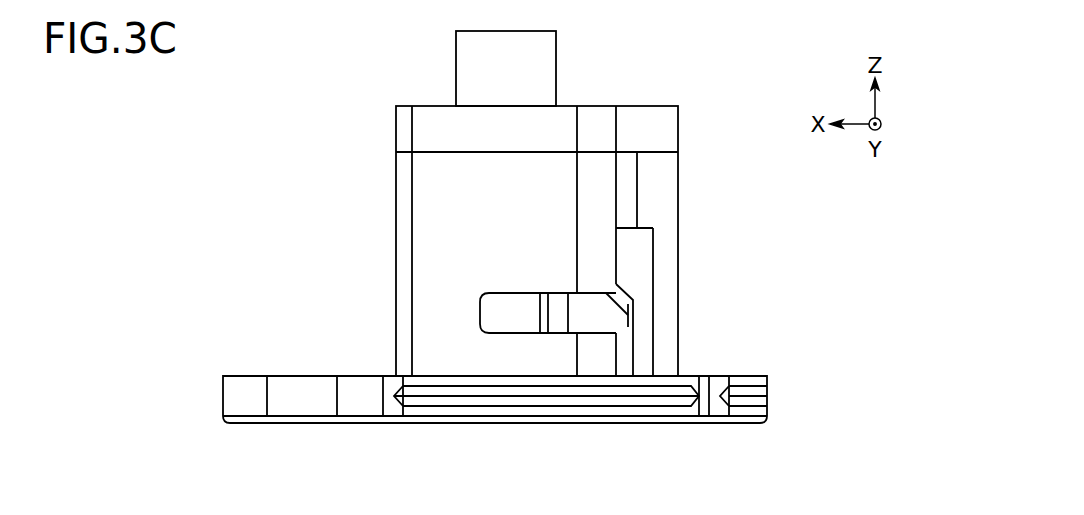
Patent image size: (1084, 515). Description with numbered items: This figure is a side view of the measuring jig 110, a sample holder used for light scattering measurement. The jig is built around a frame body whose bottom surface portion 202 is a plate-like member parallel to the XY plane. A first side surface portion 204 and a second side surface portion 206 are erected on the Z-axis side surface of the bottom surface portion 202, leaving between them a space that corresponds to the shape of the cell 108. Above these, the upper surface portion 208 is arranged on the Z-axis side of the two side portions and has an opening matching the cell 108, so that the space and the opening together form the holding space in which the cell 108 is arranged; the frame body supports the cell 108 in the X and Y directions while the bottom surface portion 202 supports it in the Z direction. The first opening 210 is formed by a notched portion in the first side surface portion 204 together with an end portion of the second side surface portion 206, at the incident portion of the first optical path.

The measuring jig 110 is at (392, 82).
The cell 108 is at (537, 31).
The first side surface portion 204 is at (422, 222).
The upper surface portion 208 is at (660, 106).
The second side surface portion 206 is at (680, 190).
The first opening 210 is at (606, 324).
The bottom surface portion 202 is at (767, 389).